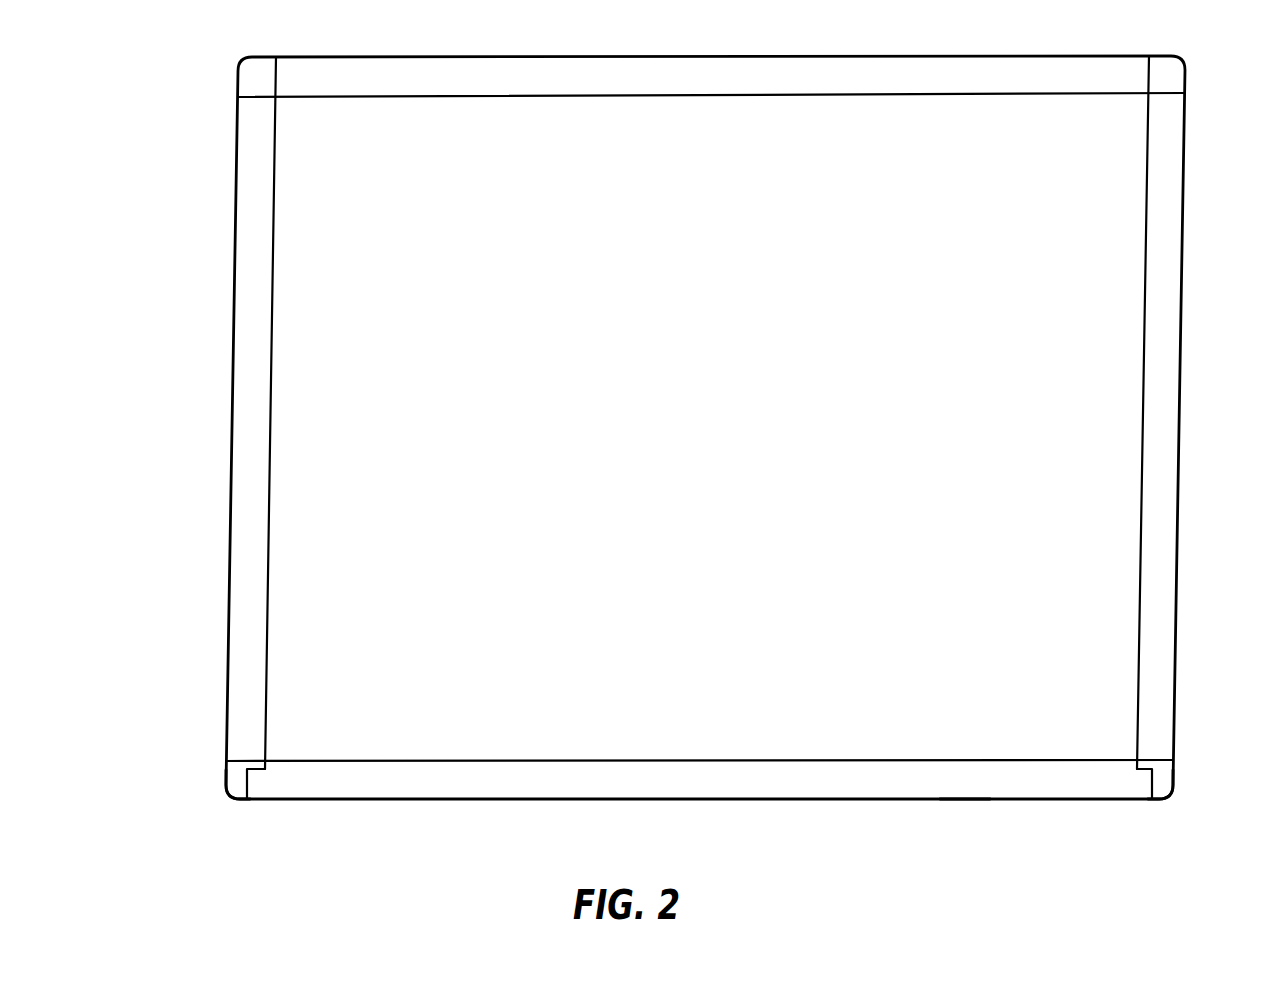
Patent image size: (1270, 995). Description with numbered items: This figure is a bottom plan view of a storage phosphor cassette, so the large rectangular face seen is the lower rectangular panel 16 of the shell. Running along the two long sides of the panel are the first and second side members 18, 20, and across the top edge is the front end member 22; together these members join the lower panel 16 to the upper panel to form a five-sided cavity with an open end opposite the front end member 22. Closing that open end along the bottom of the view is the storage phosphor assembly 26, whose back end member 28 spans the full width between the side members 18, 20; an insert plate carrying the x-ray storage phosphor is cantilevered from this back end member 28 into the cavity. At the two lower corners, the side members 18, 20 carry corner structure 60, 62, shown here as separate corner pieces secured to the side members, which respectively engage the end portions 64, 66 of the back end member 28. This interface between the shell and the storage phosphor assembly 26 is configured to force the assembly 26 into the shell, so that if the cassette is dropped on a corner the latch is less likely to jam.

The lower rectangular panel 16 is at (1118, 606).
The first side member 18 is at (1170, 505).
The second side member 20 is at (243, 581).
The front end member 22 is at (933, 79).
The storage phosphor assembly 26 is at (966, 800).
The back end member 28 is at (903, 790).
The corner structure 60 is at (225, 790).
The corner structure 62 is at (1168, 780).
The end portion 64 is at (257, 790).
The end portion 66 is at (1147, 787).